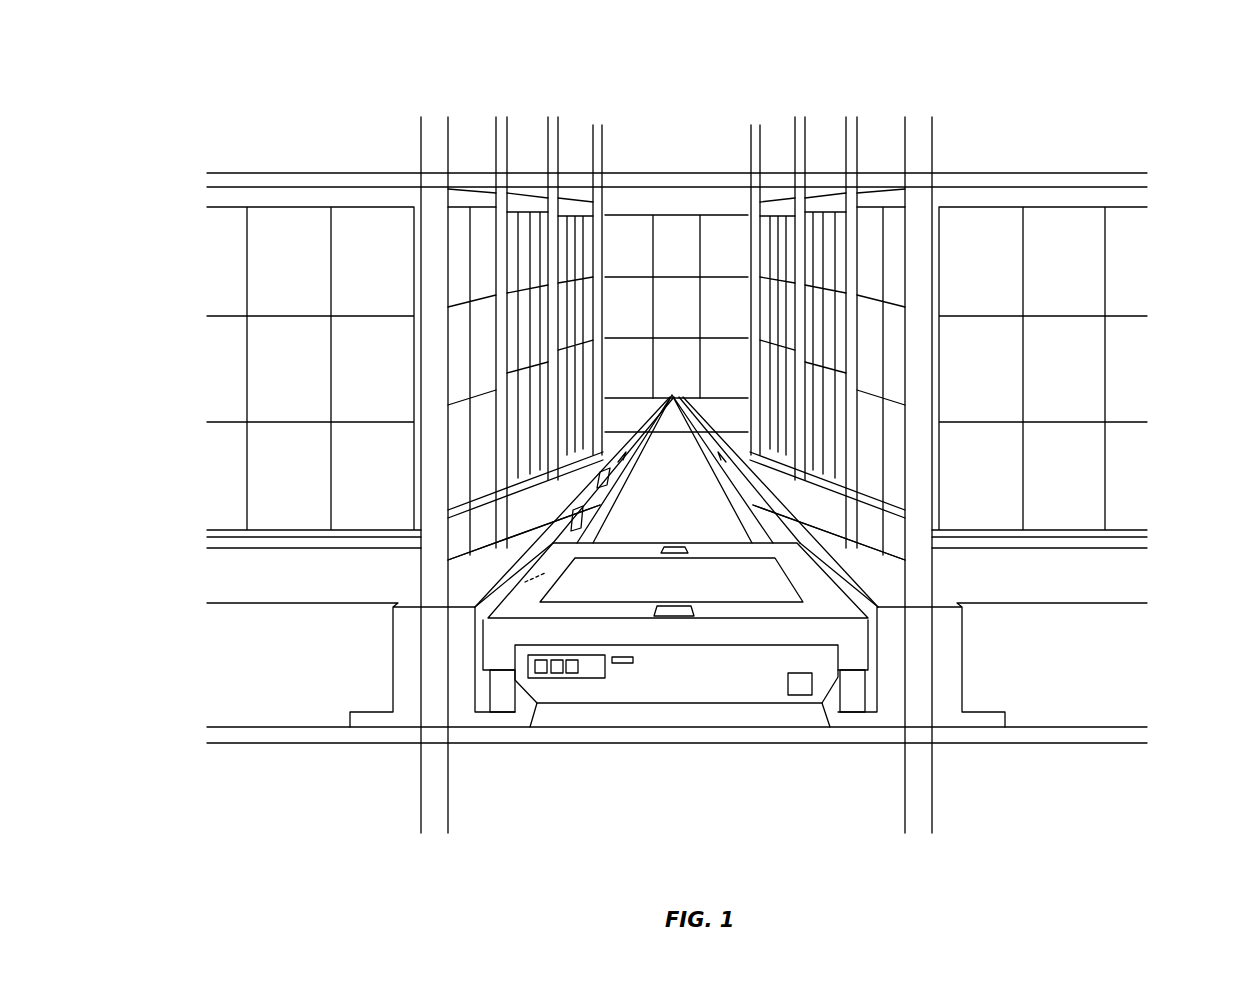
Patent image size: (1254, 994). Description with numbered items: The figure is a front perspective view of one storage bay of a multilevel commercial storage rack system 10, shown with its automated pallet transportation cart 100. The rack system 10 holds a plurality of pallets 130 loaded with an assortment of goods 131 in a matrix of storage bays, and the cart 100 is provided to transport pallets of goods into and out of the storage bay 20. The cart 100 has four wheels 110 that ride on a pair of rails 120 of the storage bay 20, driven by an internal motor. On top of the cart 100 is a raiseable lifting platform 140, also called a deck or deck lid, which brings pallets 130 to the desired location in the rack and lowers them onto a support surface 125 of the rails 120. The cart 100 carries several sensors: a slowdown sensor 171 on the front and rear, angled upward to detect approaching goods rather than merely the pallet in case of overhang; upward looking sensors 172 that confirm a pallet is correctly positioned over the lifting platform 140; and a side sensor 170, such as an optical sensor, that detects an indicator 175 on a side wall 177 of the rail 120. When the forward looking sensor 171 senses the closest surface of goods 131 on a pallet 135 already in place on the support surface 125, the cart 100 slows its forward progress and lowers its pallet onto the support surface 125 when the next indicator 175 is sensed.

The rack system 10 is at (545, 75).
The storage bay 20 is at (648, 763).
The automated pallet transportation cart 100 is at (696, 702).
The wheels 110 is at (502, 697).
The rails 120 is at (462, 692).
The support surface 125 is at (553, 512).
The pallets 130 is at (325, 573).
The goods 131 is at (713, 240).
The pallet 135 is at (693, 413).
The lifting platform 140 is at (750, 580).
The side sensor 170 is at (523, 590).
The slowdown sensor 171 is at (617, 668).
The upward looking sensors 172 is at (665, 543).
The indicator 175 is at (582, 516).
The side wall 177 is at (672, 395).